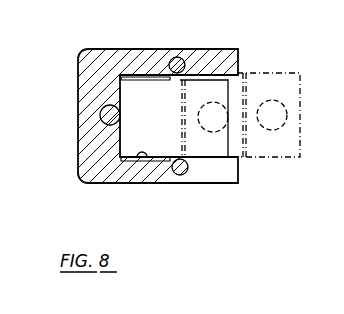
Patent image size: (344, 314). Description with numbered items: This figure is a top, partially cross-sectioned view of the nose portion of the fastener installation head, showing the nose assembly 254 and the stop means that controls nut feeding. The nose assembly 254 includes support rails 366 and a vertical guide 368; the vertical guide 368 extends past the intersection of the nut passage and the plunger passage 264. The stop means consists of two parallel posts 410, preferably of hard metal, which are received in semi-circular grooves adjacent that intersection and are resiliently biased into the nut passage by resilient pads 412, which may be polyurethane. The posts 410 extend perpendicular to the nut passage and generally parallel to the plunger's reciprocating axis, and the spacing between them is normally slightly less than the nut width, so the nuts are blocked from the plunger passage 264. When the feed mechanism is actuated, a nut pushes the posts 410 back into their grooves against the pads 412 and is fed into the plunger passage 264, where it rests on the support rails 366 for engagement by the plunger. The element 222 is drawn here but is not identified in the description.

The nose assembly 254 is at (87, 57).
The support rails 366 is at (126, 80).
The resilient pads 412 is at (98, 122).
The plunger passage 264 is at (125, 152).
The vertical guide 368 is at (171, 60).
The posts 410 is at (178, 57).
The bracket 222 is at (237, 88).